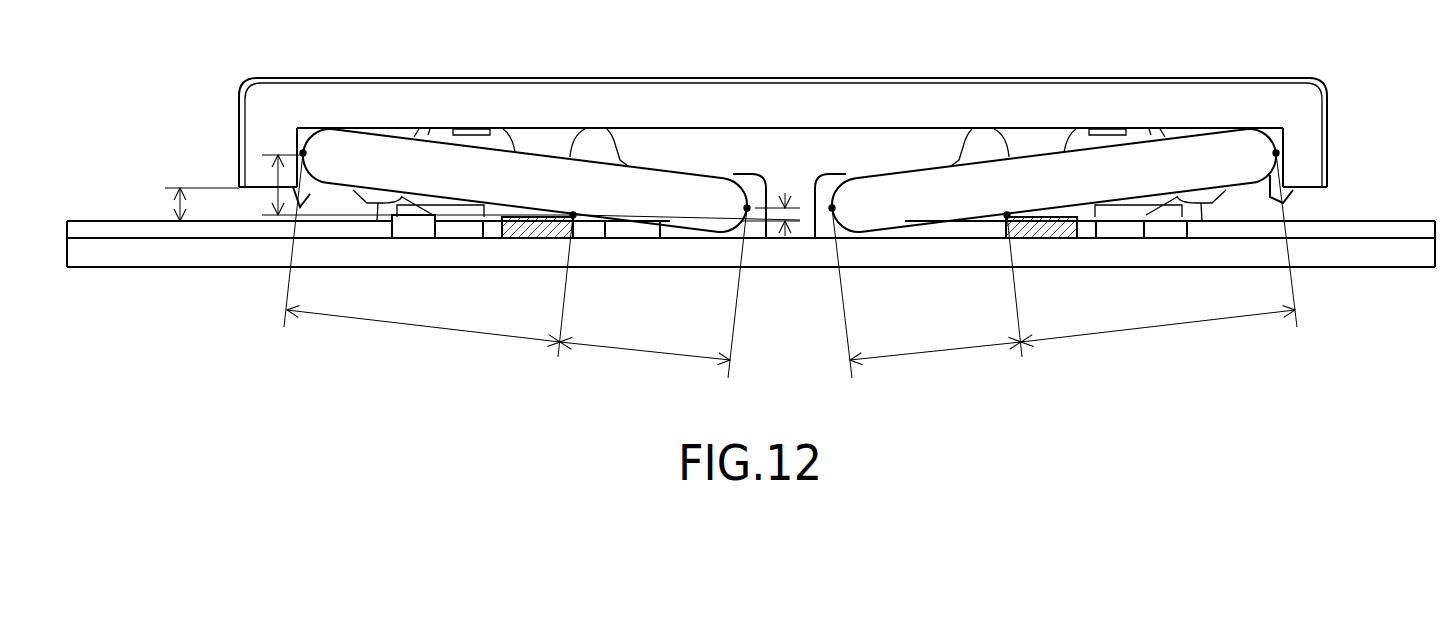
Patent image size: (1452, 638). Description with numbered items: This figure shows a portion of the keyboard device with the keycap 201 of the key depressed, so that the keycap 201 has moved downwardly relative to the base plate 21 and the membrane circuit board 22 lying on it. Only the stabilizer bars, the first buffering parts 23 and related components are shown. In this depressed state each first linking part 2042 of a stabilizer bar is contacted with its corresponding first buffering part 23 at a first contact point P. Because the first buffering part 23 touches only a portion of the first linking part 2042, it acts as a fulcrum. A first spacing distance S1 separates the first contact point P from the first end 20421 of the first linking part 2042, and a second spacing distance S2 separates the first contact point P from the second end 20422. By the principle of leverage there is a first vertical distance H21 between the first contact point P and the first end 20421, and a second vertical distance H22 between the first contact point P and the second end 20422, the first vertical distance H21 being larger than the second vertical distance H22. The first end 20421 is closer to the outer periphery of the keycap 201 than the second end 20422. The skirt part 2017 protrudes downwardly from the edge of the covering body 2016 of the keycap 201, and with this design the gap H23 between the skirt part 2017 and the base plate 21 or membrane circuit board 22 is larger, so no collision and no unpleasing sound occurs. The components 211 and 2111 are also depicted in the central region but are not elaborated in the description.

The keycap 201 is at (960, 62).
The covering body 2016 is at (1065, 93).
The skirt part 2017 is at (257, 170).
The first linking part 2042 is at (483, 170).
The first end 20421 is at (247, 88).
The second end 20422 is at (745, 207).
The elastic member 211 is at (860, 162).
The end portion of elastic member 2111 is at (758, 200).
The base plate 21 is at (1327, 249).
The membrane circuit board 22 is at (1355, 230).
The first buffering part 23 is at (543, 224).
The first contact point P is at (573, 212).
The first spacing distance S1 is at (790, 258).
The second spacing distance S2 is at (790, 297).
The first vertical distance H21 is at (509, 187).
The second vertical distance H22 is at (777, 196).
The gap H23 is at (177, 204).